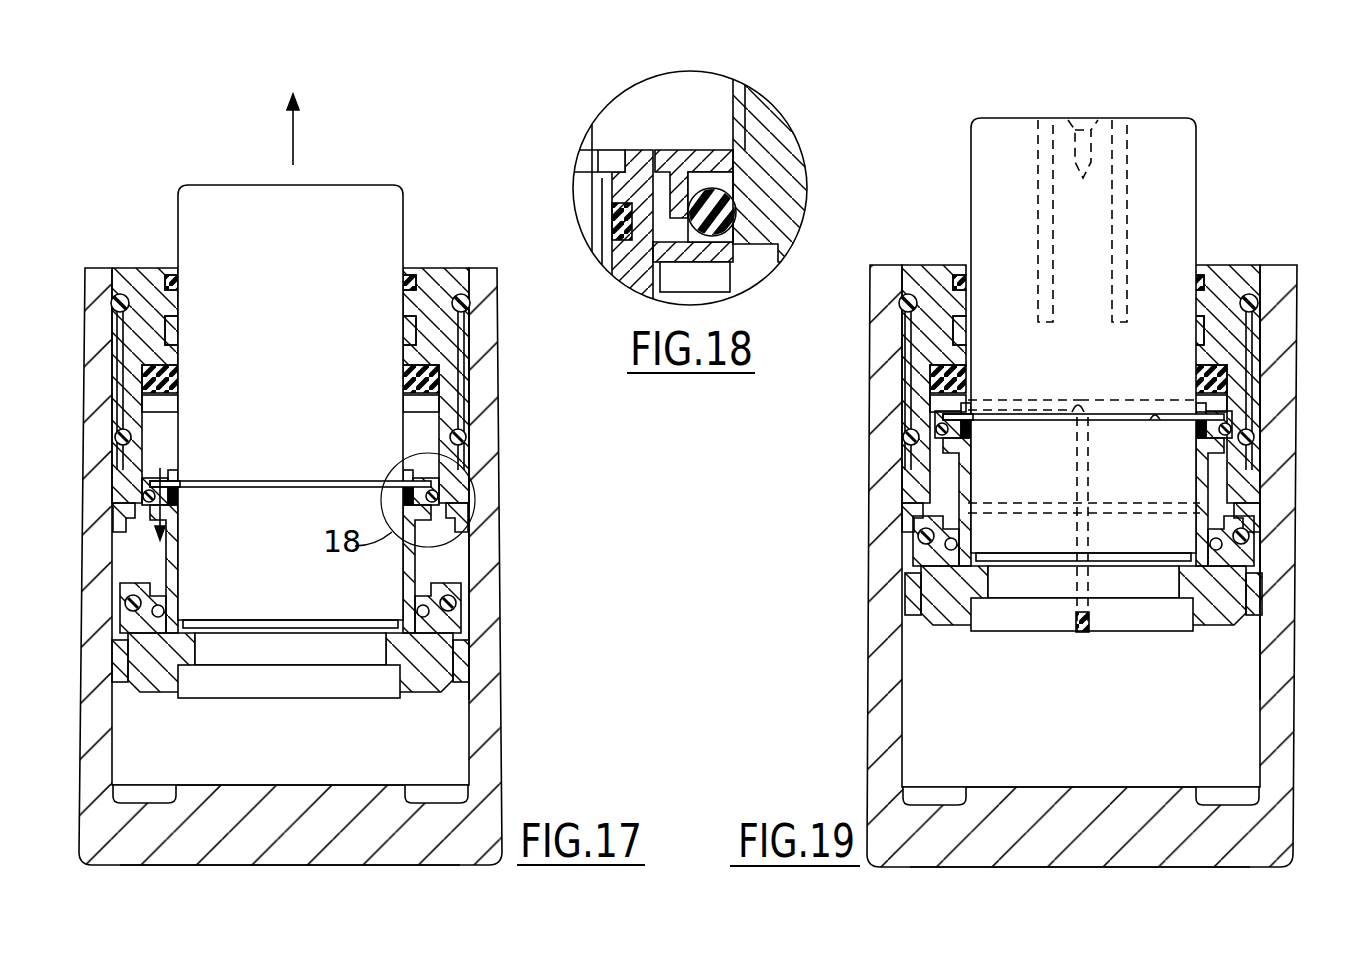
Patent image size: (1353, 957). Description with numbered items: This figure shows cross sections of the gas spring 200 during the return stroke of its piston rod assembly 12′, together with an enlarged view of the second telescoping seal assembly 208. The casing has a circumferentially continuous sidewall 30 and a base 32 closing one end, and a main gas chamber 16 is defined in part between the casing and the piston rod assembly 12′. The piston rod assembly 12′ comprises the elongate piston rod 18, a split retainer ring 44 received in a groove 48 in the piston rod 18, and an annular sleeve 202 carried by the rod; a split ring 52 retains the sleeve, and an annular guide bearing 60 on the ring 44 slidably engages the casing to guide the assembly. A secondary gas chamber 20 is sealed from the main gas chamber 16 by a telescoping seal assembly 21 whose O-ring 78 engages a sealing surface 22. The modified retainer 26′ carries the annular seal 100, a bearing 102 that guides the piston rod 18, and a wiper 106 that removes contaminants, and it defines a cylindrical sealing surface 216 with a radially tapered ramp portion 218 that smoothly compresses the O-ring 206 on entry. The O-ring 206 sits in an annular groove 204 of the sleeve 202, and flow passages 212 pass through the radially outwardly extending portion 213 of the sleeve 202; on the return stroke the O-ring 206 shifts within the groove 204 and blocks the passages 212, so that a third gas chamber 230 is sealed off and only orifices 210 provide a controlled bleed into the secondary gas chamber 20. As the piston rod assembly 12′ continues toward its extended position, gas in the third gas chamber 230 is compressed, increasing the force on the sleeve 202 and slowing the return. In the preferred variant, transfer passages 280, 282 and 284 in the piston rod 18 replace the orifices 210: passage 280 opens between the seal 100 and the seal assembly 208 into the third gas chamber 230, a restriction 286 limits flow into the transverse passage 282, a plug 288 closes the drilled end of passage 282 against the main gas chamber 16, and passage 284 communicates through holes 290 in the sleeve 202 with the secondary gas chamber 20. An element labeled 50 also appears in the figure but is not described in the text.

In FIG. 17, the piston rod assembly 12′ is at (224, 741).
In FIG. 19, the piston rod assembly 12′ is at (1014, 693).
In FIG. 17, the main gas chamber 16 is at (455, 722).
In FIG. 19, the main gas chamber 16 is at (1245, 732).
In FIG. 17, the piston rod 18 is at (408, 192).
In FIG. 19, the piston rod 18 is at (1192, 124).
In FIG. 19, the secondary gas chamber 20 is at (905, 520).
In FIG. 19, the telescoping seal assembly 21 is at (1276, 558).
In FIG. 17, the sealing surface 22 is at (118, 520).
In FIG. 19, the sealing surface 22 is at (1240, 514).
In FIG. 17, the retainer 26′ is at (438, 272).
In FIG. 18, the retainer 26′ is at (765, 110).
In FIG. 19, the retainer 26′ is at (1232, 266).
In FIG. 17, the sidewall 30 is at (492, 648).
In FIG. 19, the sidewall 30 is at (1288, 672).
In FIG. 17, the base 32 is at (428, 860).
In FIG. 19, the base 32 is at (1076, 862).
In FIG. 17, the split retainer ring 44 is at (395, 692).
In FIG. 19, the split retainer ring 44 is at (1228, 626).
In FIG. 17, the groove 48 is at (293, 672).
In FIG. 19, the groove 48 is at (1096, 600).
In FIG. 17, the plate 50 is at (300, 488).
In FIG. 19, the plate 50 is at (1083, 432).
In FIG. 17, the split ring 52 is at (182, 488).
In FIG. 19, the split ring 52 is at (975, 414).
In FIG. 17, the guide bearing 60 is at (130, 675).
In FIG. 19, the guide bearing 60 is at (908, 622).
In FIG. 17, the O-ring 78 is at (460, 604).
In FIG. 19, the O-ring 78 is at (1255, 542).
In FIG. 17, the seal 100 is at (183, 380).
In FIG. 19, the seal 100 is at (1197, 372).
In FIG. 17, the bearing 102 is at (186, 325).
In FIG. 19, the bearing 102 is at (964, 318).
In FIG. 17, the wiper 106 is at (185, 285).
In FIG. 19, the wiper 106 is at (962, 278).
In FIG. 17, the gas spring 200 is at (152, 148).
In FIG. 19, the gas spring 200 is at (1286, 130).
In FIG. 17, the annular sleeve 202 is at (410, 572).
In FIG. 18, the annular sleeve 202 is at (630, 285).
In FIG. 19, the annular sleeve 202 is at (1200, 486).
In FIG. 18, the annular groove 204 is at (698, 168).
In FIG. 17, the O-ring 206 is at (445, 498).
In FIG. 18, the O-ring 206 is at (730, 218).
In FIG. 19, the O-ring 206 is at (1240, 430).
In FIG. 17, the second telescoping seal assembly 208 is at (462, 489).
In FIG. 18, the second telescoping seal assembly 208 is at (775, 180).
In FIG. 19, the second telescoping seal assembly 208 is at (1268, 440).
In FIG. 17, the orifices 210 is at (172, 478).
In FIG. 17, the flow passages 212 is at (412, 466).
In FIG. 18, the flow passages 212 is at (662, 168).
In FIG. 18, the radially outwardly extending portion 213 is at (723, 258).
In FIG. 17, the cylindrical sealing surface 216 is at (160, 410).
In FIG. 19, the cylindrical sealing surface 216 is at (1252, 398).
In FIG. 17, the radially tapered ramp portion 218 is at (135, 470).
In FIG. 18, the radially tapered ramp portion 218 is at (758, 180).
In FIG. 19, the radially tapered ramp portion 218 is at (905, 474).
In FIG. 17, the third gas chamber 230 is at (410, 406).
In FIG. 19, the third gas chamber 230 is at (900, 408).
In FIG. 19, the transfer passage 280 is at (1074, 396).
In FIG. 19, the passage 282 is at (1140, 425).
In FIG. 19, the passage 284 is at (1162, 510).
In FIG. 19, the restriction 286 is at (1088, 396).
In FIG. 19, the plug 288 is at (1074, 630).
In FIG. 19, the holes 290 is at (955, 478).